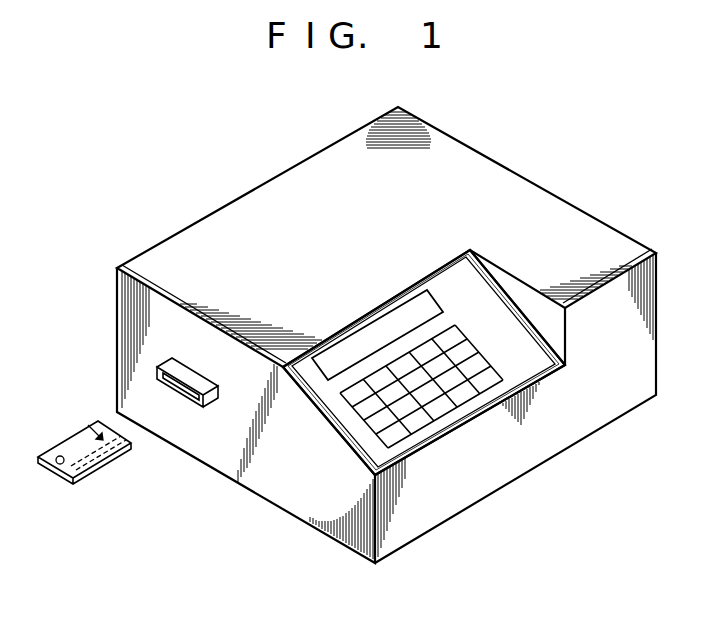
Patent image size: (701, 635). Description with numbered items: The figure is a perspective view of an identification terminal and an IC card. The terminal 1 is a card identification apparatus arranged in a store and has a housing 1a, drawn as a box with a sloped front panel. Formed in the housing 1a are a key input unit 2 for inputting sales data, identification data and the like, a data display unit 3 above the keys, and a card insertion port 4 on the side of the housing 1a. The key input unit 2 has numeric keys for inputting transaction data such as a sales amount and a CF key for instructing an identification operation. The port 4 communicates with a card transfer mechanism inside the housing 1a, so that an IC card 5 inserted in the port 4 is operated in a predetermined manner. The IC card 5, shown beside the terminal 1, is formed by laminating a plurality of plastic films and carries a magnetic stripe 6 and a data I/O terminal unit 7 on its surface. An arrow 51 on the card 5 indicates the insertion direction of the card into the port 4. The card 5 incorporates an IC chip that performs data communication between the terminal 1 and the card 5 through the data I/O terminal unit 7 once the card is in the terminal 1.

The terminal 1 is at (523, 368).
The housing 1a is at (540, 201).
The key input unit 2 is at (468, 351).
The data display unit 3 is at (424, 303).
The card insertion port 4 is at (201, 408).
The IC card 5 is at (84, 461).
The arrow 51 is at (89, 424).
The magnetic stripe 6 is at (104, 466).
The data I/O terminal unit 7 is at (58, 455).